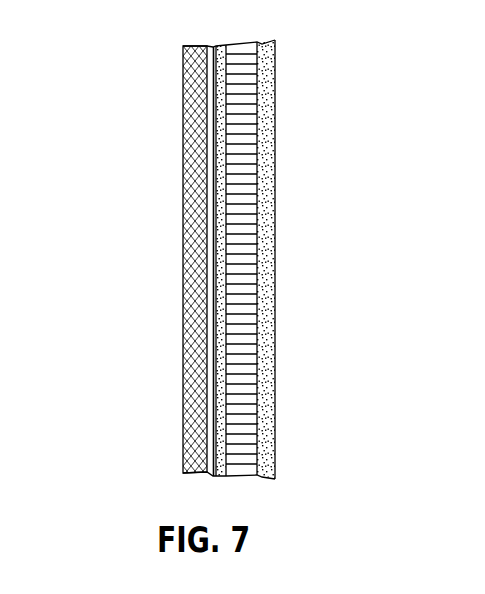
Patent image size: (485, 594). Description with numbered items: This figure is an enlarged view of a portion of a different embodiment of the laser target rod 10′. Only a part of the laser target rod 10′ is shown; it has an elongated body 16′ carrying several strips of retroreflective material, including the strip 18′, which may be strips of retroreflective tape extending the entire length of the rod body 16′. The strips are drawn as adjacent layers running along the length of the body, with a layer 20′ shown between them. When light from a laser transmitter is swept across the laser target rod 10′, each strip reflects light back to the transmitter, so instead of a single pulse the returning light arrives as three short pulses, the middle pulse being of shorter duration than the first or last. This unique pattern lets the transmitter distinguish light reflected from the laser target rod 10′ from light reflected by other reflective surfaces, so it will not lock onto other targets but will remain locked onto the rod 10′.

The laser target rod 10′ is at (330, 79).
The elongated body 16′ is at (215, 412).
The strip of retroreflective material 18′ is at (268, 58).
The core layer 20′ is at (238, 323).